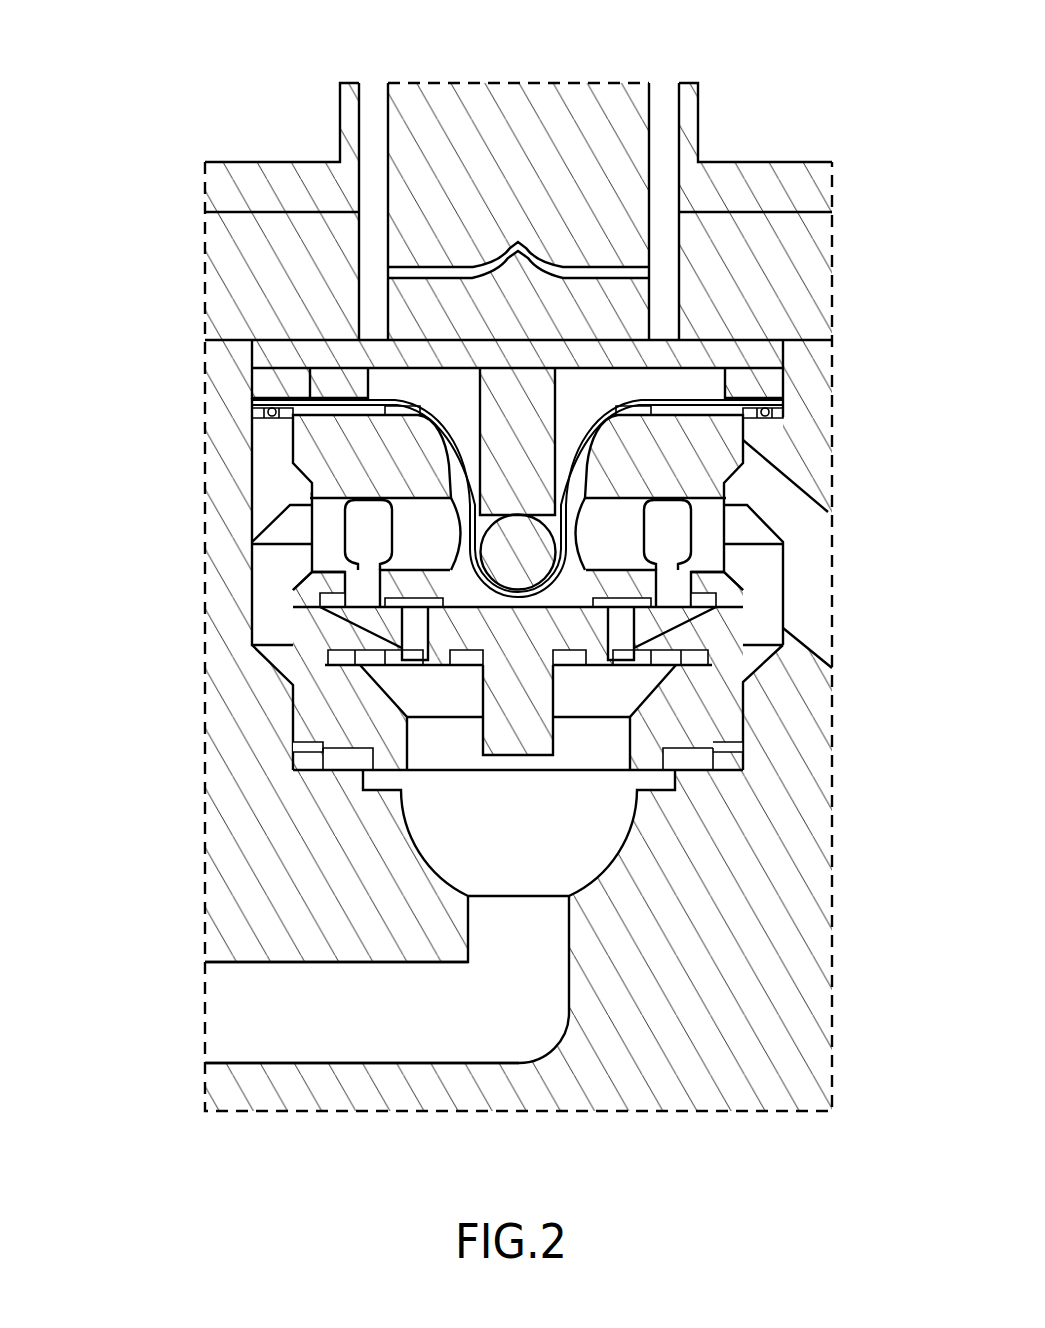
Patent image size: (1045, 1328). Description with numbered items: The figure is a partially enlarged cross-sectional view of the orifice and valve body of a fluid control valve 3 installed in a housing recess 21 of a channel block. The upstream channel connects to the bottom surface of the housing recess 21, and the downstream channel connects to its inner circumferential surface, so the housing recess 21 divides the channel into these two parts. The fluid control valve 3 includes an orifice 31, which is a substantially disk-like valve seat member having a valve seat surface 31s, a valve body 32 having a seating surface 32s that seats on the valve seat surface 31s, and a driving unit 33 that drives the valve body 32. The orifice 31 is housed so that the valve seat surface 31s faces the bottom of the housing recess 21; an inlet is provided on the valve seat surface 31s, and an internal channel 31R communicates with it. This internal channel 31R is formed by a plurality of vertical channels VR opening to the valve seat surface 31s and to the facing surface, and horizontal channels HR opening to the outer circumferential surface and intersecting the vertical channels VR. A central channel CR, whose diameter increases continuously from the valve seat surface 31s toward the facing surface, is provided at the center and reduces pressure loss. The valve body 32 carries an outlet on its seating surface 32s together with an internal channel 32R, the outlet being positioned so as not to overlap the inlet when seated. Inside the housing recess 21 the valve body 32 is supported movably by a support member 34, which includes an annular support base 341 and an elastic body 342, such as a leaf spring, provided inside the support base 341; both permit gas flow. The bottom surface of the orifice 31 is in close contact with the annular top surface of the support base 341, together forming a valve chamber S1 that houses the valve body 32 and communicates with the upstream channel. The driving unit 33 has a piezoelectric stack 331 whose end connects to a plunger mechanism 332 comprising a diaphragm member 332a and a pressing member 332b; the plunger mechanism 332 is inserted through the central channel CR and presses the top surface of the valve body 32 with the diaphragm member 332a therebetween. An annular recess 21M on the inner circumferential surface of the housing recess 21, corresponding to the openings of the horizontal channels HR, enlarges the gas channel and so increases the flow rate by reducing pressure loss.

The fluid control valve 3 is at (258, 35).
The housing recess 21 is at (745, 712).
The annular recess 21M is at (752, 517).
The orifice (valve seat member) 31 is at (292, 590).
The internal channel 31R is at (474, 504).
The valve seat surface 31s is at (322, 608).
The valve body 32 is at (553, 690).
The internal channel 32R is at (413, 645).
The seating surface 32s is at (728, 576).
The driving unit 33 is at (372, 199).
The piezoelectric stack 331 is at (500, 100).
The plunger mechanism 332 is at (409, 420).
The diaphragm member 332a is at (370, 397).
The pressing member 332b is at (388, 310).
The support member 34 is at (402, 725).
The support base 341 is at (300, 660).
The elastic body 342 is at (323, 743).
The central channel CR is at (448, 487).
The horizontal channels HR is at (421, 550).
The vertical channels VR is at (359, 609).
The valve chamber S1 is at (460, 705).